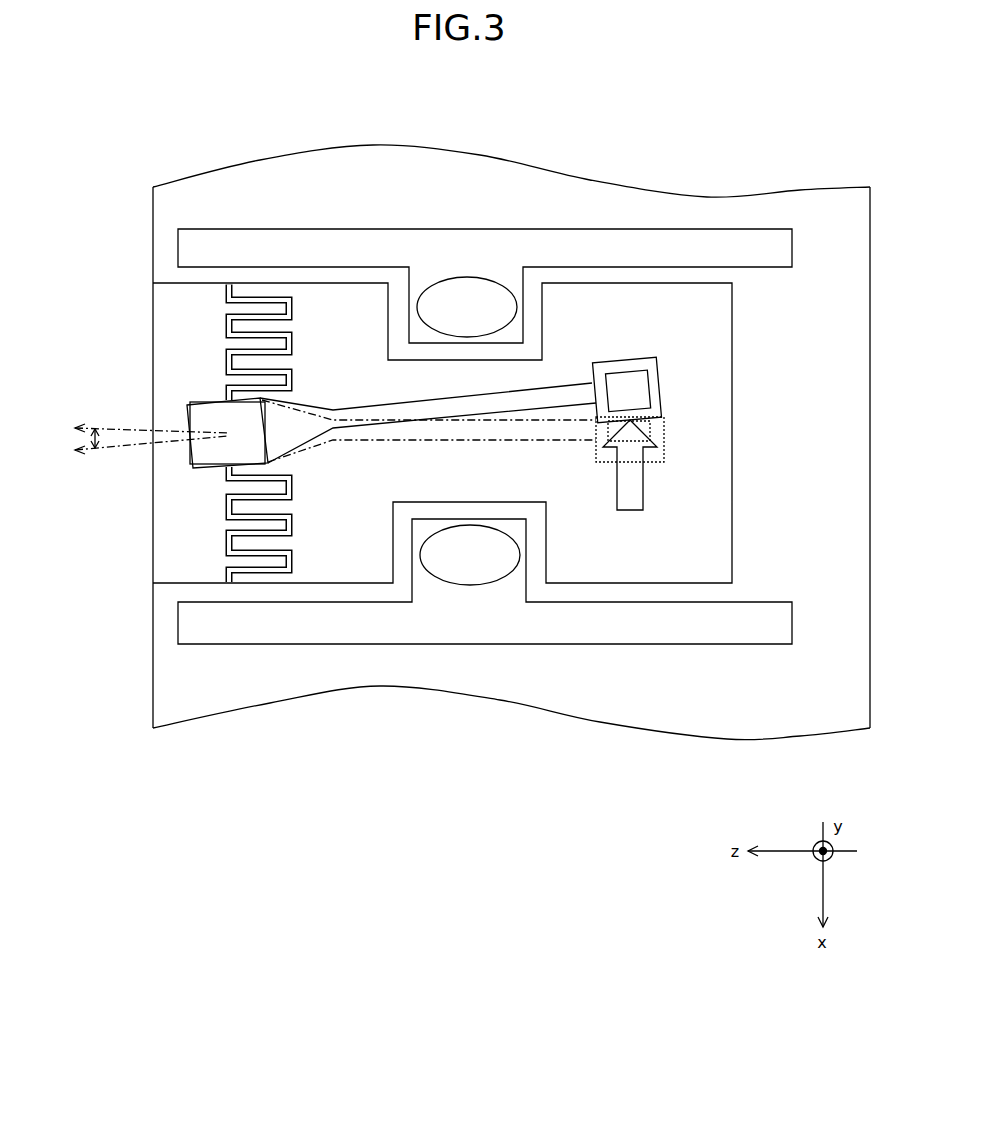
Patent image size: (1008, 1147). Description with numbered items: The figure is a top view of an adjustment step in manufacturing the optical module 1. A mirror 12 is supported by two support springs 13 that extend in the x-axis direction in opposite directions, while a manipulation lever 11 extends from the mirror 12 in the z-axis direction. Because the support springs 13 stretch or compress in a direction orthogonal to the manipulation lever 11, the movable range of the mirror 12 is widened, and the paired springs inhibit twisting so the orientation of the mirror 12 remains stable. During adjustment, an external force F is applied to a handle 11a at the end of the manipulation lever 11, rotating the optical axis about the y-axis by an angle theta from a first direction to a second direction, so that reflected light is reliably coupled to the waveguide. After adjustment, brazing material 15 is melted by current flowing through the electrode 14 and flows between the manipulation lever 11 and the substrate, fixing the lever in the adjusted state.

The optical module 1 is at (620, 120).
The manipulation lever 11 is at (560, 397).
The handle 11a is at (633, 383).
The mirror 12 is at (207, 410).
The support spring 13 is at (223, 328).
The electrode 14 is at (704, 242).
The brazing material 15 is at (469, 292).